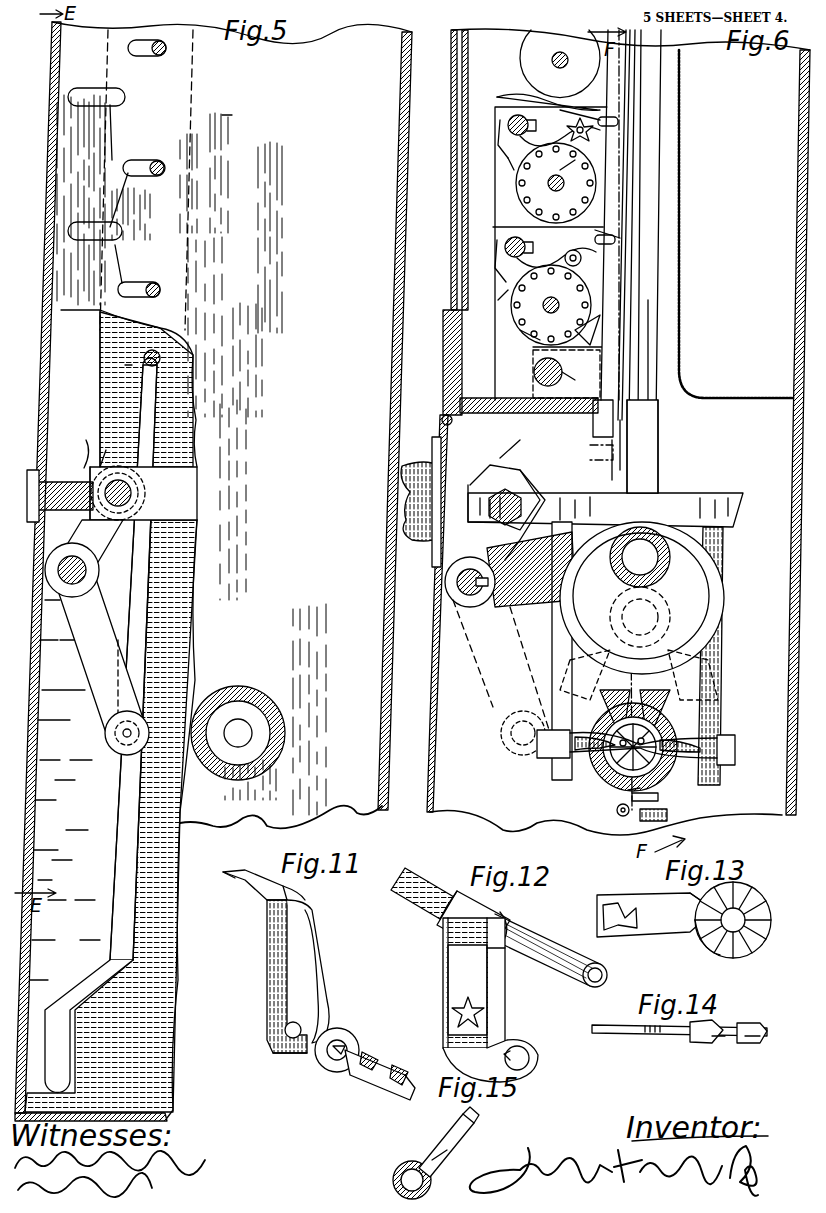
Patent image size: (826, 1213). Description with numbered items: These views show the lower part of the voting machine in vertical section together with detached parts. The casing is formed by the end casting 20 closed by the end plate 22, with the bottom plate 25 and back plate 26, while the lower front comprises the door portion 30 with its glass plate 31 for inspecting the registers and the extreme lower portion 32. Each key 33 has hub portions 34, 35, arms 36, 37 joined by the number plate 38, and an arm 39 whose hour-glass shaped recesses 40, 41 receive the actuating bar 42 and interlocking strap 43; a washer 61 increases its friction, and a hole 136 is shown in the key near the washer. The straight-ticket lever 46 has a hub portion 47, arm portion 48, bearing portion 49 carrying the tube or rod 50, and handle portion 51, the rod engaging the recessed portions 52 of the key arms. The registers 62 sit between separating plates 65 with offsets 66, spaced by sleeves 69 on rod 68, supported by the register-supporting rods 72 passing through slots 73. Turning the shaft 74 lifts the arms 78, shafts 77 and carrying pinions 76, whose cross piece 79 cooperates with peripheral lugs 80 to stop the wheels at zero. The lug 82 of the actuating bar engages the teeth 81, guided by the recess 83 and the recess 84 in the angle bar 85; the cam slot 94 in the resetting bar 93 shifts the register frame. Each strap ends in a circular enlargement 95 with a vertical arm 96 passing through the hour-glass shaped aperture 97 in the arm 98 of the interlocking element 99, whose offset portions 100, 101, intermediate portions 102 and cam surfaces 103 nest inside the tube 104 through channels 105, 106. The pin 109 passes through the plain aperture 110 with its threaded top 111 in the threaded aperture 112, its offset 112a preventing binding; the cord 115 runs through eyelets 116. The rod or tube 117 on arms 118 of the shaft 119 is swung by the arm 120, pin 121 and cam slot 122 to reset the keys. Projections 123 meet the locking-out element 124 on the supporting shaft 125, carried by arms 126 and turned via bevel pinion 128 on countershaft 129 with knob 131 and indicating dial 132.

In FIG. 5, the end casting 20 is at (191, 455).
In FIG. 6, the end casting 20 is at (668, 390).
In FIG. 5, the end plate 22 is at (111, 714).
In FIG. 5, the bottom plate 25 is at (168, 1113).
In FIG. 5, the back plate 26 is at (402, 287).
In FIG. 6, the back plate 26 is at (800, 278).
In FIG. 6, the door portion 30 is at (452, 185).
In FIG. 6, the glass plate 31 is at (462, 118).
In FIG. 6, the extreme lower portion of front plate 32 is at (438, 645).
In FIG. 11, the key 33 is at (352, 927).
In FIG. 11, the hub portion 34 is at (270, 1040).
In FIG. 11, the hub portion 35 is at (348, 1040).
In FIG. 11, the arm 36 is at (270, 968).
In FIG. 11, the arm 37 is at (324, 971).
In FIG. 11, the number plate 38 is at (224, 880).
In FIG. 11, the arm 39 is at (390, 1080).
In FIG. 11, the hour-glass shaped recess 40 is at (378, 1060).
In FIG. 11, the hour-glass shaped recess 41 is at (403, 1067).
In FIG. 6, the actuating bar 42 is at (614, 167).
In FIG. 6, the interlocking strap 43 is at (650, 190).
In FIG. 12, the straight-ticket lever 46 is at (513, 975).
In FIG. 12, the hub portion 47 is at (517, 1046).
In FIG. 12, the arm portion 48 is at (444, 936).
In FIG. 12, the bearing portion 49 is at (505, 912).
In FIG. 12, the tube or rod 50 is at (552, 946).
In FIG. 12, the handle portion 51 is at (432, 890).
In FIG. 11, the recessed portion 52 is at (303, 905).
In FIG. 11, the washer 61 is at (340, 1030).
In FIG. 6, the register 62 is at (553, 244).
In FIG. 6, the intermediate separating plate 65 is at (547, 64).
In FIG. 6, the offset 66 is at (600, 118).
In FIG. 5, the transverse rod 68 is at (160, 356).
In FIG. 6, the transverse rod 68 is at (534, 378).
In FIG. 6, the sleeve 69 is at (578, 386).
In FIG. 5, the register-supporting rod 72 is at (157, 282).
In FIG. 6, the register-supporting rod 72 is at (561, 68).
In FIG. 5, the slot 73 is at (98, 185).
In FIG. 5, the shaft 74 is at (213, 116).
In FIG. 6, the shaft 74 is at (508, 128).
In FIG. 6, the carrying pinion 76 is at (584, 140).
In FIG. 6, the shaft 77 is at (570, 166).
In FIG. 6, the arm 78 is at (505, 103).
In FIG. 6, the cross piece 79 is at (505, 160).
In FIG. 6, the peripheral lug 80 is at (535, 176).
In FIG. 6, the tooth 81 is at (540, 340).
In FIG. 6, the lug 82 is at (595, 340).
In FIG. 6, the recess 83 is at (618, 123).
In FIG. 6, the recess 84 is at (592, 424).
In FIG. 6, the angle bar 85 is at (520, 414).
In FIG. 5, the resetting bar 93 is at (116, 362).
In FIG. 5, the cam slot 94 is at (152, 392).
In FIG. 6, the cam slot 94 is at (560, 745).
In FIG. 6, the circular enlargement 95 is at (722, 585).
In FIG. 6, the vertical arm 96 is at (552, 660).
In FIG. 13, the hour-glass shaped aperture 97 is at (615, 908).
In FIG. 13, the arm 98 is at (635, 917).
In FIG. 14, the arm 98 is at (608, 1027).
In FIG. 13, the interlocking element 99 is at (690, 897).
In FIG. 14, the offset portion 100 is at (750, 1023).
In FIG. 14, the offset portion 101 is at (715, 1043).
In FIG. 13, the intermediate portion 102 is at (695, 928).
In FIG. 13, the cam surface 103 is at (740, 890).
In FIG. 14, the cam surface 103 is at (700, 1043).
In FIG. 5, the tube 104 is at (262, 703).
In FIG. 6, the tube 104 is at (612, 782).
In FIG. 6, the channel 105 is at (622, 720).
In FIG. 6, the channel 106 is at (650, 720).
In FIG. 6, the pin 109 is at (658, 792).
In FIG. 15, the pin 109 is at (415, 1162).
In FIG. 6, the plain aperture 110 is at (667, 812).
In FIG. 15, the threaded top 111 is at (478, 1116).
In FIG. 6, the threaded aperture 112 is at (638, 668).
In FIG. 15, the offset 112a is at (455, 1145).
In FIG. 6, the cord 115 is at (620, 815).
In FIG. 6, the eyelet 116 is at (628, 798).
In FIG. 6, the rod or tube 117 is at (670, 552).
In FIG. 6, the arm 118 is at (495, 575).
In FIG. 5, the shaft 119 is at (86, 572).
In FIG. 6, the shaft 119 is at (468, 596).
In FIG. 5, the arm 120 is at (99, 629).
In FIG. 6, the arm 120 is at (500, 735).
In FIG. 5, the pin 121 is at (122, 747).
In FIG. 5, the cam slot 122 is at (120, 827).
In FIG. 6, the projection 123 is at (565, 504).
In FIG. 6, the locking-out element 124 is at (505, 475).
In FIG. 5, the supporting shaft 125 is at (112, 478).
In FIG. 6, the supporting shaft 125 is at (490, 508).
In FIG. 5, the arm 126 is at (108, 545).
In FIG. 5, the bevel pinion 128 is at (100, 467).
In FIG. 5, the countershaft 129 is at (84, 468).
In FIG. 5, the operating handle or knob 131 is at (48, 480).
In FIG. 6, the operating handle or knob 131 is at (398, 498).
In FIG. 6, the indicating dial 132 is at (432, 450).
In FIG. 11, the hole 136 is at (293, 1048).